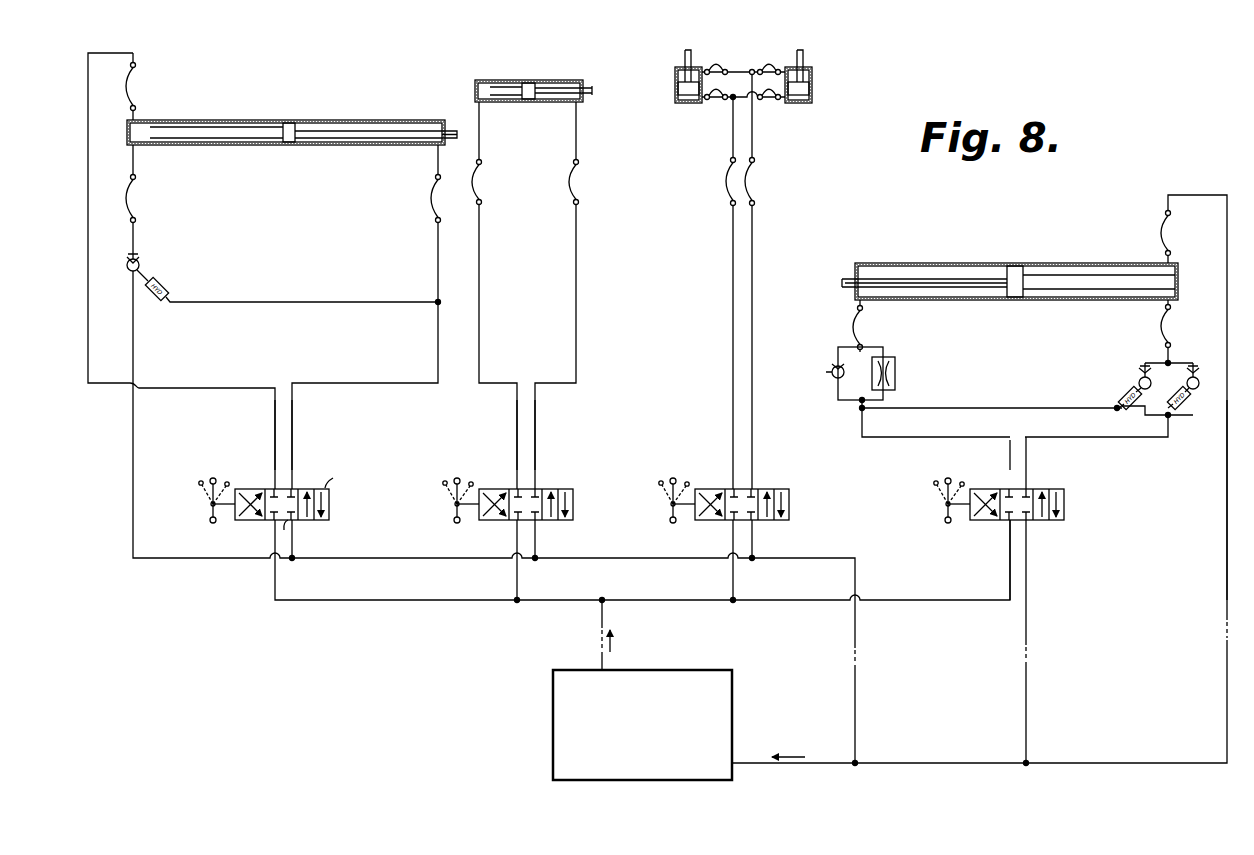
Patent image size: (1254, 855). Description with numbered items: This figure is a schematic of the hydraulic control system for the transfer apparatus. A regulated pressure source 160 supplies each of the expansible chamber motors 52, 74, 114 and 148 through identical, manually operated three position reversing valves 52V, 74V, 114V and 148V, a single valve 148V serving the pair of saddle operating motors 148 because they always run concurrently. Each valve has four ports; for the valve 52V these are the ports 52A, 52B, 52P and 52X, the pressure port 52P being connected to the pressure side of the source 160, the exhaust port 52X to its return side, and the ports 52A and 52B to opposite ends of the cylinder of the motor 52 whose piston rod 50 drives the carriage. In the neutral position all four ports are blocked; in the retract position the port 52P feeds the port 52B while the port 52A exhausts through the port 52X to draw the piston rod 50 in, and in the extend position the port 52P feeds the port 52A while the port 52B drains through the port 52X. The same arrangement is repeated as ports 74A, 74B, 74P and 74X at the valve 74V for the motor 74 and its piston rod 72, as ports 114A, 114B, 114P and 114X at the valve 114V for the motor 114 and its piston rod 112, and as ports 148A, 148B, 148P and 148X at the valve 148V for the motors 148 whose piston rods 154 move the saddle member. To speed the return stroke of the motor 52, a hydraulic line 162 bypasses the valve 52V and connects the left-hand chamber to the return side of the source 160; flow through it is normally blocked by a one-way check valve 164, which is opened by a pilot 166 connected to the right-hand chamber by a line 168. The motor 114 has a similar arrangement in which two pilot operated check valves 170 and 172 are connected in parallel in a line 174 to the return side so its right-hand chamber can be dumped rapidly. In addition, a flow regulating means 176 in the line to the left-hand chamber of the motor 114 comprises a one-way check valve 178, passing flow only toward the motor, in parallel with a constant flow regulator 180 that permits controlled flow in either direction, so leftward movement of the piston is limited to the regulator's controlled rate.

The piston rod 50 is at (454, 126).
The expansible chamber motor 52 is at (255, 146).
The port 52A is at (273, 425).
The port 52B is at (294, 426).
The three position reversing valve 52V is at (306, 488).
The exhaust port 52X is at (293, 528).
The pressure port 52P is at (274, 583).
The piston rod 72 is at (590, 86).
The expansible chamber motor 74 is at (511, 80).
The conduit 74A is at (515, 427).
The conduit 74B is at (537, 428).
The three position reversing valve 74V is at (561, 489).
The pressure conduit 74P is at (516, 537).
The exhaust conduit 74X is at (537, 536).
The piston rod 112 is at (846, 279).
The expansible chamber motor 114 is at (1059, 301).
The conduit 114A is at (1009, 456).
The conduit 114B is at (1028, 462).
The three position reversing valve 114V is at (1048, 521).
The pressure conduit 114P is at (1009, 555).
The exhaust conduit 114X is at (1028, 579).
The expansible chamber motor 148 is at (693, 105).
The conduit 148A is at (732, 396).
The conduit 148B is at (754, 396).
The three position reversing valve 148V is at (781, 489).
The pressure conduit 148P is at (732, 536).
The exhaust conduit 148X is at (754, 536).
The piston rod 154 is at (797, 53).
The regulated pressure source 160 is at (733, 698).
The hydraulic line 162 is at (135, 350).
The one-way check valve 164 is at (141, 259).
The pilot 166 is at (170, 285).
The line 168 is at (282, 301).
The pilot operated check valve 170 is at (1136, 378).
The pilot operated check valve 172 is at (1197, 390).
The line 174 is at (1226, 493).
The flow regulating means 176 is at (902, 364).
The one-way check valve 178 is at (834, 369).
The constant flow regulator 180 is at (898, 383).